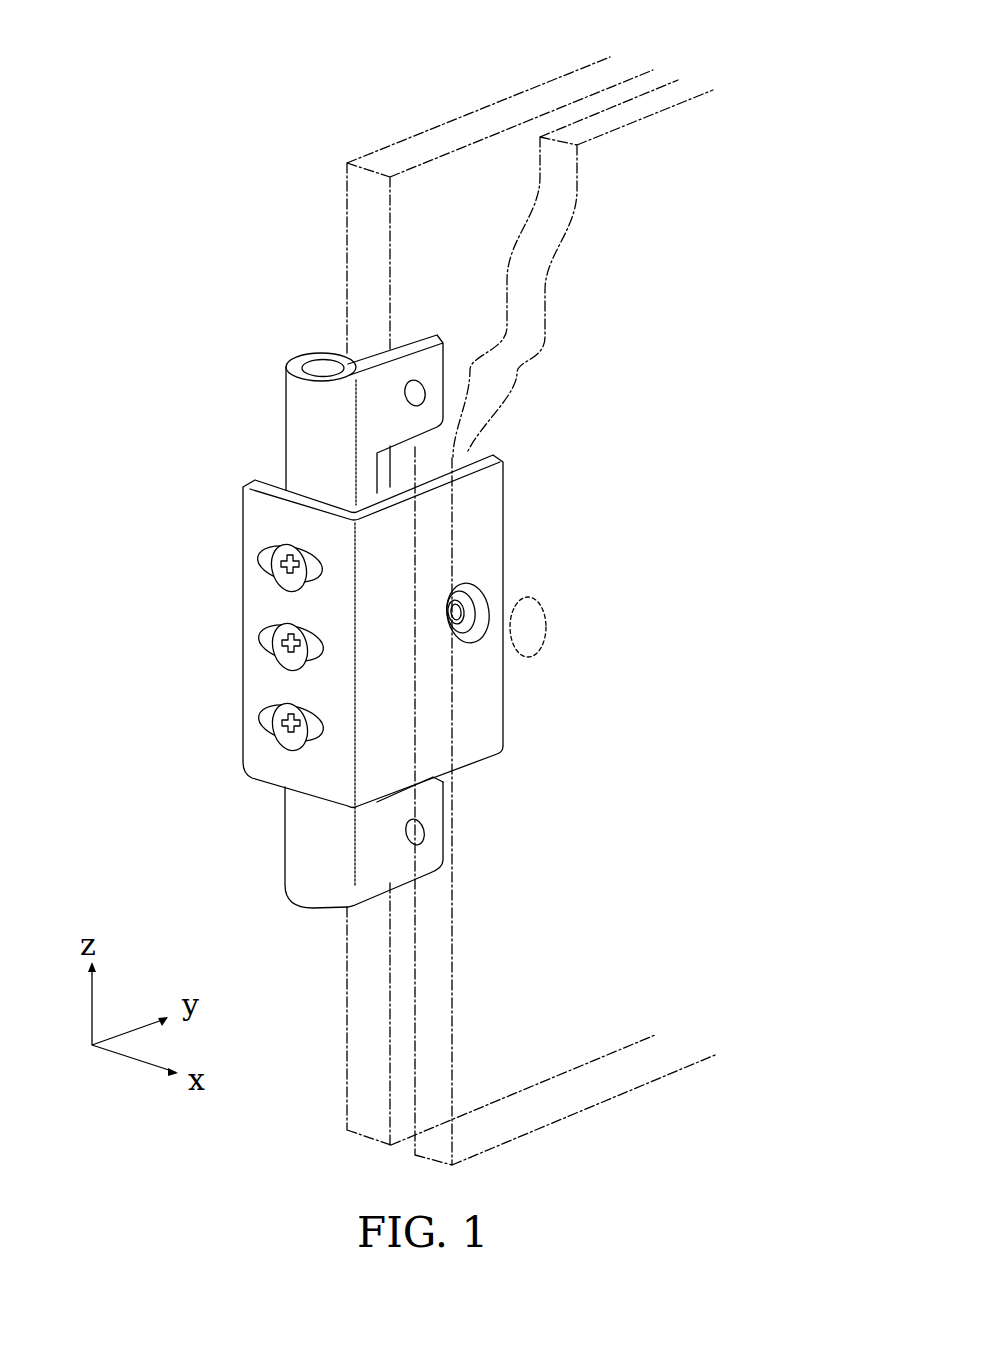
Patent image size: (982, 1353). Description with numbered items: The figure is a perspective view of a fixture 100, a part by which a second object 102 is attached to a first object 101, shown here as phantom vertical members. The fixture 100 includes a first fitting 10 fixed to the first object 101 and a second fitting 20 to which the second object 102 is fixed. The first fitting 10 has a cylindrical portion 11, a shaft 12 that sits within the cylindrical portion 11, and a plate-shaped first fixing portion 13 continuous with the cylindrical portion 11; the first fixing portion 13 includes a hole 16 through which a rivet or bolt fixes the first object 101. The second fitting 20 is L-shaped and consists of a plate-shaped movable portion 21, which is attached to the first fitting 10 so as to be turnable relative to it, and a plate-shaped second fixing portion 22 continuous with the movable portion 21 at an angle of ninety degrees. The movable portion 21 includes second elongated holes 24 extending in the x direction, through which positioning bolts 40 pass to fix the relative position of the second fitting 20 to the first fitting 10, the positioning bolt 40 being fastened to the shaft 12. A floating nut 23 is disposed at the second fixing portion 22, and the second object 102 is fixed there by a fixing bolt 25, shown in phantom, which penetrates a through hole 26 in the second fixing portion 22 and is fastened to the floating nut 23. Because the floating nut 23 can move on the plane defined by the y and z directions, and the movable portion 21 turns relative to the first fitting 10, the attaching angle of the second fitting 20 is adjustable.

The fixture 100 is at (229, 252).
The first object 101 is at (462, 125).
The second object 102 is at (657, 102).
The first fitting 10 is at (365, 594).
The cylindrical portion 11 is at (306, 405).
The shaft 12 is at (318, 362).
The first fixing portion 13 is at (424, 395).
The hole 16 is at (413, 382).
The second fitting 20 is at (396, 671).
The movable portion 21 is at (262, 777).
The second fixing portion 22 is at (487, 747).
The floating nut 23 is at (480, 592).
The second elongated holes 24 is at (262, 558).
The fixing bolt 25 is at (540, 606).
The through hole 26 is at (473, 640).
The positioning bolt 40 is at (266, 582).